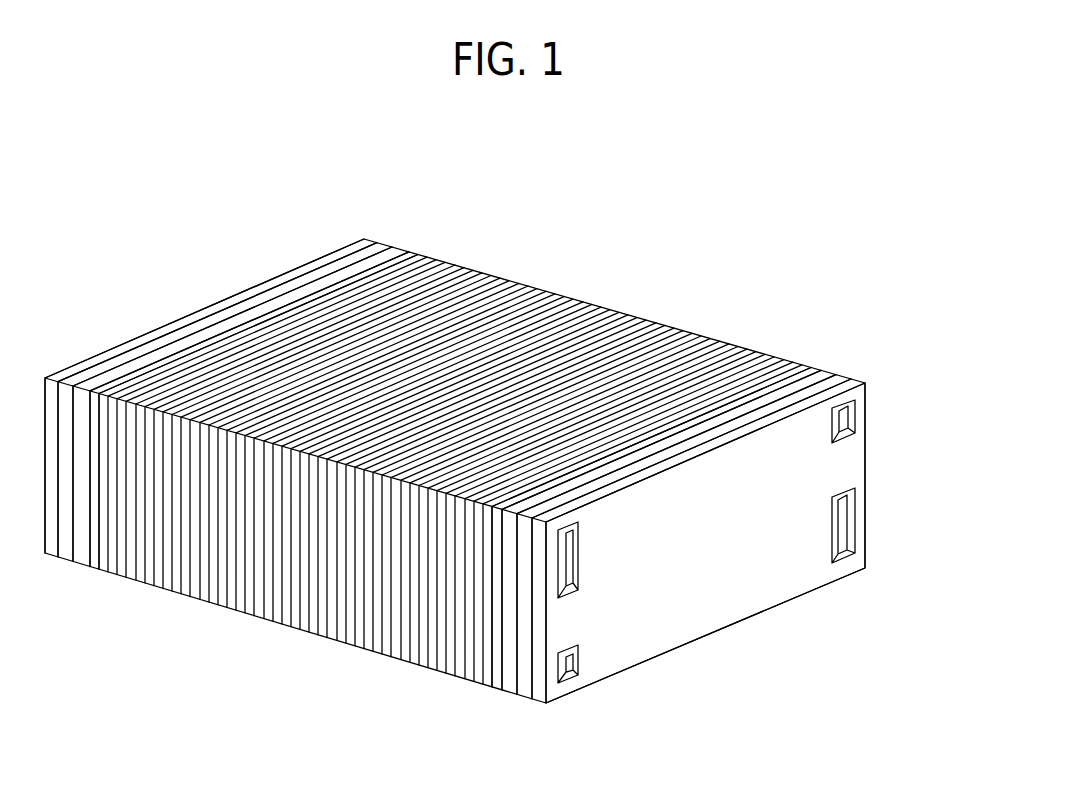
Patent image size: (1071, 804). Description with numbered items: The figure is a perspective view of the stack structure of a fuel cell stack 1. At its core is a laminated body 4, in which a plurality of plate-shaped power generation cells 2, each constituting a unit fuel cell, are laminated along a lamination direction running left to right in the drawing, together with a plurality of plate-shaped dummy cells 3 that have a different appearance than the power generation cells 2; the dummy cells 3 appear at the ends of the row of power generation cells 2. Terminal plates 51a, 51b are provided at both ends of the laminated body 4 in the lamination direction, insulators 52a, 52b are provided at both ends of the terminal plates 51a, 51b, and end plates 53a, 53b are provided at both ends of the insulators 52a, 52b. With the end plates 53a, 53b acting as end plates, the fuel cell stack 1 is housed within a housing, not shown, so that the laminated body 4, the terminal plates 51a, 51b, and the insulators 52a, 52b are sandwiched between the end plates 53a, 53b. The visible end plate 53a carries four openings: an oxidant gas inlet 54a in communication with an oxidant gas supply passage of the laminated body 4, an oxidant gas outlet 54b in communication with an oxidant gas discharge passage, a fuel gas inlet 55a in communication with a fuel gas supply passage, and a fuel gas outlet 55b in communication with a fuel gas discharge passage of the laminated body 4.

The fuel cell stack 1 is at (796, 211).
The power generation cell 2 is at (795, 292).
The dummy cell 3 is at (412, 257).
The laminated body 4 is at (458, 426).
The terminal plate 51a is at (823, 377).
The terminal plate 51b is at (397, 250).
The insulator 52a is at (840, 378).
The insulator 52b is at (382, 245).
The end plate 53a is at (780, 580).
The end plate 53b is at (315, 262).
The oxidant gas inlet 54a is at (572, 560).
The oxidant gas outlet 54b is at (856, 540).
The fuel gas inlet 55a is at (860, 422).
The fuel gas outlet 55b is at (570, 672).